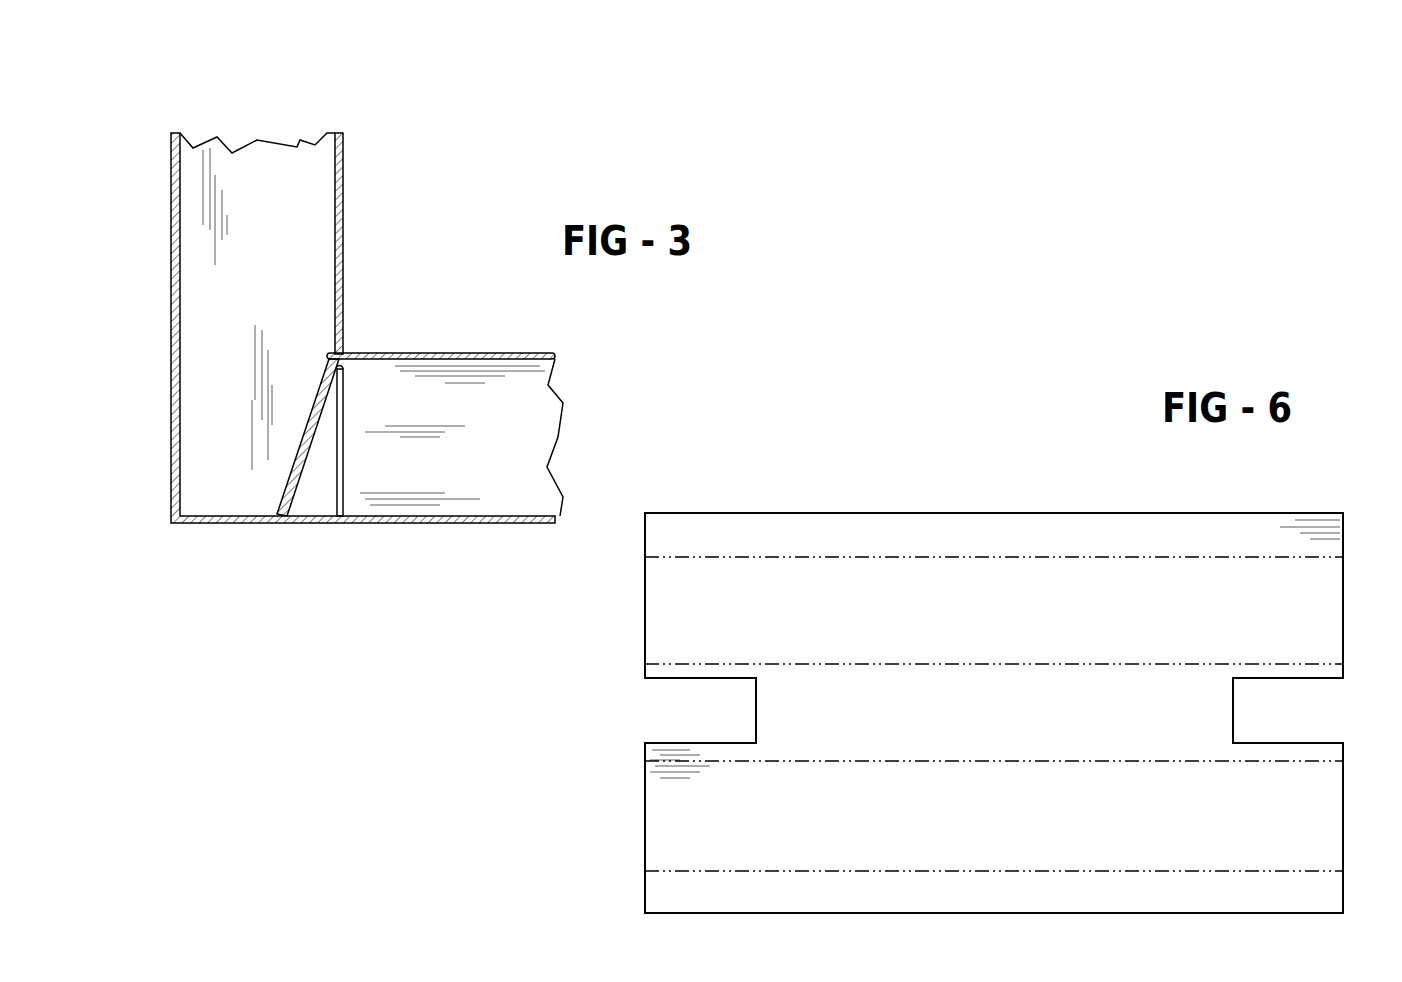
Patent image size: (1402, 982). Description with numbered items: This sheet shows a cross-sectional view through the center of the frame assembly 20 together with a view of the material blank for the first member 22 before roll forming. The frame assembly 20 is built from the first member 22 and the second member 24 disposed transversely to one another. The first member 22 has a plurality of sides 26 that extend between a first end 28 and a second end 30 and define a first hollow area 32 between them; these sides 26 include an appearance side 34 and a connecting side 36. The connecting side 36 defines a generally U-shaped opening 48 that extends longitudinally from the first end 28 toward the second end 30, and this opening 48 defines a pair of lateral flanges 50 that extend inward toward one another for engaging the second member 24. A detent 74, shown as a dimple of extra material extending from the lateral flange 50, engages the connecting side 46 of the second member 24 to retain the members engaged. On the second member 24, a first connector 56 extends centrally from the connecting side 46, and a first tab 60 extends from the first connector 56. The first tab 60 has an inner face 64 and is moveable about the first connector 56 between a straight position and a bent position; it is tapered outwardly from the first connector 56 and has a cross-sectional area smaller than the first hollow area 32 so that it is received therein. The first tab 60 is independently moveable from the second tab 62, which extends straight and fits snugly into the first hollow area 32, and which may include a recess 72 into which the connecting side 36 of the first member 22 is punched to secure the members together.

In FIG. 3, the frame assembly 20 is at (315, 578).
In FIG. 3, the first member 22 is at (257, 136).
In FIG. 6, the first member 22 is at (643, 830).
In FIG. 3, the second member 24 is at (472, 412).
In FIG. 3, the sides 26 is at (167, 173).
In FIG. 6, the first end 28 is at (655, 510).
In FIG. 6, the second end 30 is at (1333, 510).
In FIG. 3, the first hollow area 32 is at (255, 291).
In FIG. 6, the appearance side 34 is at (994, 688).
In FIG. 3, the connecting side 36 is at (170, 267).
In FIG. 6, the connecting side 36 is at (994, 706).
In FIG. 3, the connecting side 46 is at (538, 353).
In FIG. 3, the opening 48 is at (342, 477).
In FIG. 6, the opening 48 is at (675, 681).
In FIG. 3, the lateral flanges 50 is at (345, 442).
In FIG. 6, the lateral flanges 50 is at (655, 675).
In FIG. 3, the first connector 56 is at (330, 353).
In FIG. 3, the first tab 60 is at (315, 418).
In FIG. 3, the second tab 62 is at (237, 523).
In FIG. 3, the inner face 64 is at (302, 465).
In FIG. 3, the recess 72 is at (182, 525).
In FIG. 3, the detent 74 is at (370, 353).
In FIG. 6, the detent 74 is at (745, 678).